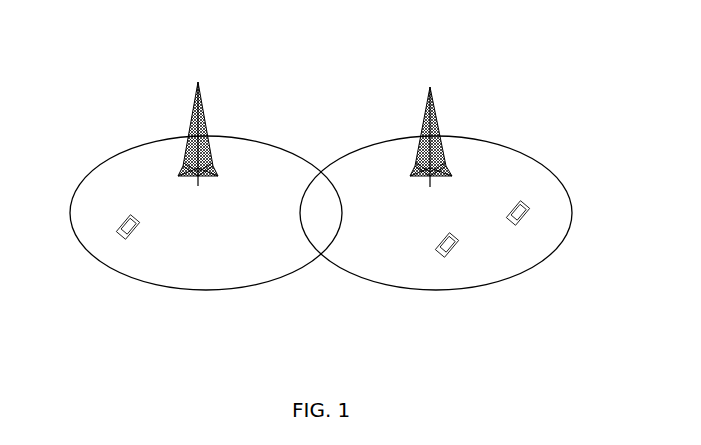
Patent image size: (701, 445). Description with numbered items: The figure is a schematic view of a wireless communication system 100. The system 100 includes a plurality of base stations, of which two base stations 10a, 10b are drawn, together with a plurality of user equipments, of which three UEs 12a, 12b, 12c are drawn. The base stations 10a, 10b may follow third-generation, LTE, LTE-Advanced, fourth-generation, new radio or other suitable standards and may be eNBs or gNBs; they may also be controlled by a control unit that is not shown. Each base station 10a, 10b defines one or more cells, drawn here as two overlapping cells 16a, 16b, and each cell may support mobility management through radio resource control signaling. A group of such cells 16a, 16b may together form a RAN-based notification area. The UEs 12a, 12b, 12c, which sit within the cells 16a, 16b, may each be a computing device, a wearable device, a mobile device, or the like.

The wireless communication system 100 is at (591, 101).
The base station 10a is at (207, 97).
The base station 10b is at (453, 96).
The UE 12a is at (107, 209).
The UE 12b is at (536, 225).
The UE 12c is at (458, 258).
The cell 16a is at (232, 260).
The cell 16b is at (395, 260).